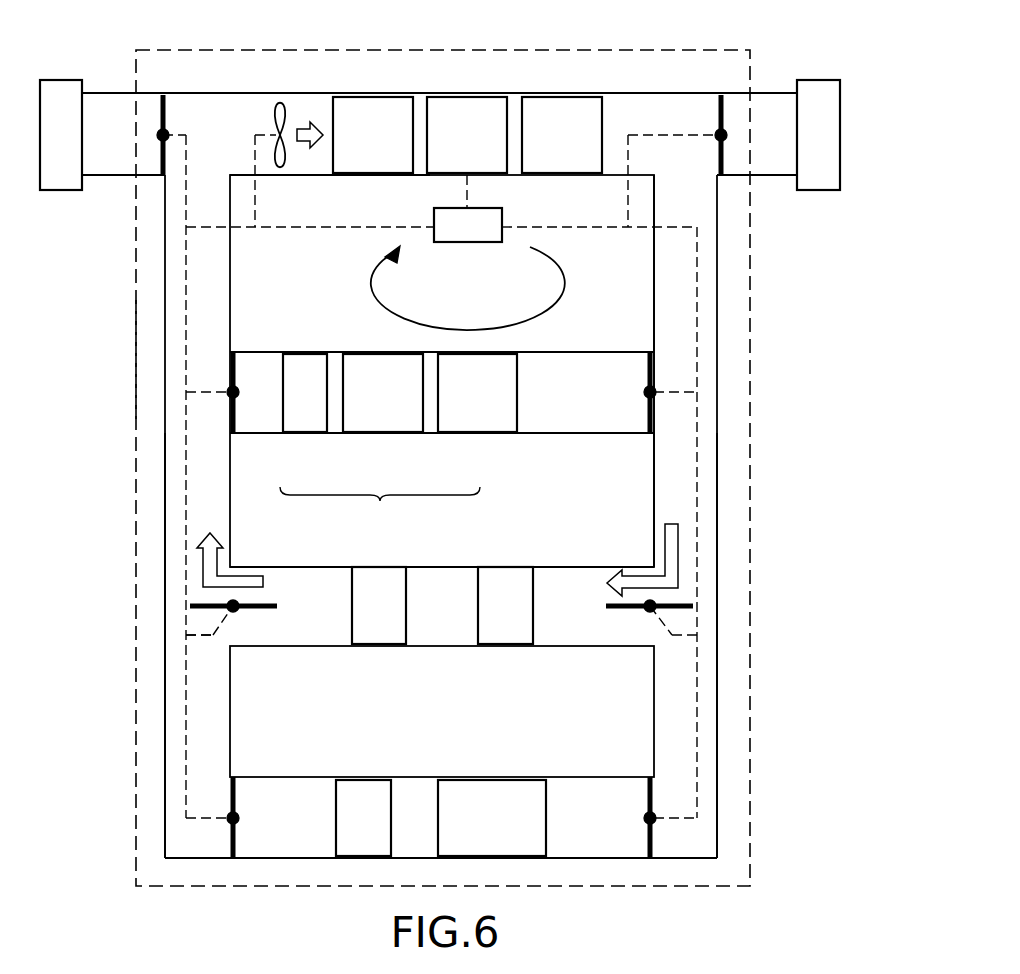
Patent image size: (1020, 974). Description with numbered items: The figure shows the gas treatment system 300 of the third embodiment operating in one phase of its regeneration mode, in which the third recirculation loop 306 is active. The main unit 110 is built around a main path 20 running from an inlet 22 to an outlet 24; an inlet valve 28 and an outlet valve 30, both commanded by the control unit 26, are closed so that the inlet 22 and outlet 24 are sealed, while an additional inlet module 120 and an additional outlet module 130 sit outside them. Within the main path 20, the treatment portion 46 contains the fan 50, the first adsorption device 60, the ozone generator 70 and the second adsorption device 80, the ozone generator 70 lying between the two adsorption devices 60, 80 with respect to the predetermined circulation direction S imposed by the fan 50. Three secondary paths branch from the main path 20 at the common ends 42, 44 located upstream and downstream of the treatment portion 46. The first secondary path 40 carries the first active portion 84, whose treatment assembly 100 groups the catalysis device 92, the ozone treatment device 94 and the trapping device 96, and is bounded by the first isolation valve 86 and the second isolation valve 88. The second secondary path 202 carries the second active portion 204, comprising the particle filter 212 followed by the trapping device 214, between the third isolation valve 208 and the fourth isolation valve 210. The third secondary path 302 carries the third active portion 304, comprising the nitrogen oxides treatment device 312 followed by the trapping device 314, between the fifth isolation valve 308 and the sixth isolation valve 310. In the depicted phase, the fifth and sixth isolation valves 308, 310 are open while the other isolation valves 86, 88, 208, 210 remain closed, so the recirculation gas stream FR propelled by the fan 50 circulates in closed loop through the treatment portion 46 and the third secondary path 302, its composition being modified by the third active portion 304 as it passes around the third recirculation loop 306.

The main path 20 is at (240, 100).
The inlet 22 is at (150, 165).
The outlet 24 is at (737, 165).
The control unit 26 is at (476, 243).
The inlet valve 28 is at (167, 107).
The outlet valve 30 is at (718, 107).
The first secondary path 40 is at (213, 285).
The end of first secondary path 42 is at (178, 192).
The end of first secondary path 44 is at (707, 200).
The treatment portion 46 is at (303, 168).
The fan 50 is at (292, 96).
The first adsorption device 60 is at (363, 103).
The ozone generator 70 is at (464, 103).
The second adsorption device 80 is at (555, 103).
The first active portion 84 is at (528, 422).
The first isolation valve 86 is at (645, 403).
The second isolation valve 88 is at (237, 405).
The catalysis device 92 is at (476, 418).
The ozone treatment device 94 is at (380, 418).
The trapping device 96 is at (297, 417).
The treatment assembly 100 is at (380, 510).
The main unit 110 is at (756, 436).
The additional inlet module 120 is at (58, 76).
The additional outlet module 130 is at (818, 76).
The second secondary path 202 is at (177, 733).
The second active portion 204 is at (412, 792).
The third isolation valve 208 is at (645, 800).
The fourth isolation valve 210 is at (237, 800).
The particle filter 212 is at (497, 788).
The trapping device 214 is at (357, 788).
The gas treatment system 300 is at (96, 319).
The third secondary path 302 is at (678, 293).
The third active portion 304 is at (427, 570).
The third recirculation loop 306 is at (195, 622).
The fifth isolation valve 308 is at (635, 608).
The sixth isolation valve 310 is at (256, 610).
The nitrogen oxides treatment device 312 is at (515, 632).
The trapping device 314 is at (377, 632).
The predetermined circulation direction S is at (568, 275).
The recirculation gas stream FR is at (313, 122).